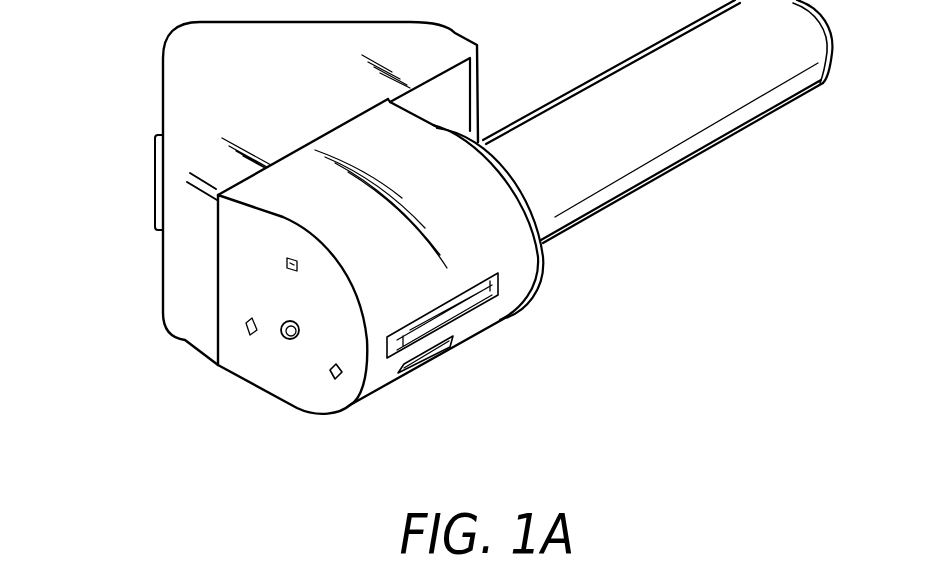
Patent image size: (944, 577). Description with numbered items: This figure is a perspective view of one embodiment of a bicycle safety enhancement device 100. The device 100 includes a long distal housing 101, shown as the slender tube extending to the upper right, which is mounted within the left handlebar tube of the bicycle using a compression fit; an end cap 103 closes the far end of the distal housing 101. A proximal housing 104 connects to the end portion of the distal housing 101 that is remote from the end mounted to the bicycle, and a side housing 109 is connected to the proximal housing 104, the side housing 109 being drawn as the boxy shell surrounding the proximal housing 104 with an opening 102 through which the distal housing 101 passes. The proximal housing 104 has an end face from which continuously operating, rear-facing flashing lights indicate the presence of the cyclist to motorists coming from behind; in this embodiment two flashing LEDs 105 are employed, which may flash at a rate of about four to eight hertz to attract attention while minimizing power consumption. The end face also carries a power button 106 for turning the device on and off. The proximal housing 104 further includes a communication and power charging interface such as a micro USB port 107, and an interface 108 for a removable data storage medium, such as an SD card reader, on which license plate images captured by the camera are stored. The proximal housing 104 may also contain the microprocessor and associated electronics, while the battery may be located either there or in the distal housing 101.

The bicycle safety enhancement device 100 is at (122, 192).
The distal housing 101 is at (641, 188).
The housing opening 102 is at (478, 81).
The end cap 103 is at (824, 86).
The proximal housing 104 is at (247, 380).
The flashing LEDs 105 is at (338, 378).
The power button 106 is at (291, 340).
The micro USB port 107 is at (404, 372).
The interface for removable data storage medium 108 is at (451, 338).
The side housing 109 is at (192, 347).